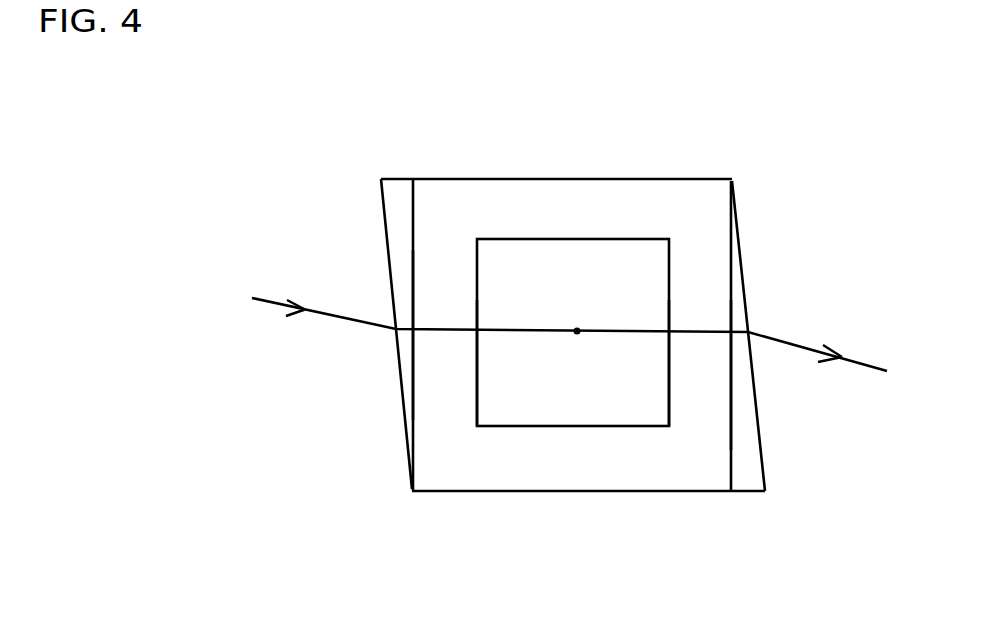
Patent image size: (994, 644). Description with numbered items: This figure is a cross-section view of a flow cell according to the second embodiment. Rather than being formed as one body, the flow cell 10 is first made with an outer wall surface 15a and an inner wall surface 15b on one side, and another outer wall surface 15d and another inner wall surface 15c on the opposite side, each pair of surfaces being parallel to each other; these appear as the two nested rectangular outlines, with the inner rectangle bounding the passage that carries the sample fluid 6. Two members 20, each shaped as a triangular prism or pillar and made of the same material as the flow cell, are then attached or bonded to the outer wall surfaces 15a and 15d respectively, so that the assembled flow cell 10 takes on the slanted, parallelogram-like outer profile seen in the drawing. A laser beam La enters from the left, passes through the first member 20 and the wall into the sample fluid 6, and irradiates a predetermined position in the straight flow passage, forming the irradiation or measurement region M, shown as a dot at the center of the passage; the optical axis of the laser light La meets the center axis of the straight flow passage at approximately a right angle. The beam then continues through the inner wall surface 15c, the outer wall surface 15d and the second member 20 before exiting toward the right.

The flow cell 10 is at (570, 193).
The members 20 is at (398, 190).
The sample fluid 6 is at (650, 296).
The outer wall surface 15a is at (412, 355).
The inner wall surface 15b is at (477, 382).
The inner wall surface 15c is at (669, 382).
The outer wall surface 15d is at (733, 405).
The measurement region M is at (577, 335).
The laser beam La is at (268, 298).